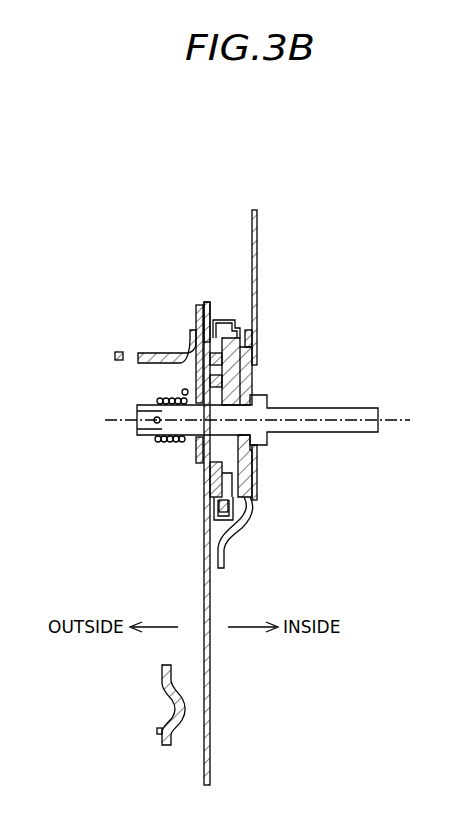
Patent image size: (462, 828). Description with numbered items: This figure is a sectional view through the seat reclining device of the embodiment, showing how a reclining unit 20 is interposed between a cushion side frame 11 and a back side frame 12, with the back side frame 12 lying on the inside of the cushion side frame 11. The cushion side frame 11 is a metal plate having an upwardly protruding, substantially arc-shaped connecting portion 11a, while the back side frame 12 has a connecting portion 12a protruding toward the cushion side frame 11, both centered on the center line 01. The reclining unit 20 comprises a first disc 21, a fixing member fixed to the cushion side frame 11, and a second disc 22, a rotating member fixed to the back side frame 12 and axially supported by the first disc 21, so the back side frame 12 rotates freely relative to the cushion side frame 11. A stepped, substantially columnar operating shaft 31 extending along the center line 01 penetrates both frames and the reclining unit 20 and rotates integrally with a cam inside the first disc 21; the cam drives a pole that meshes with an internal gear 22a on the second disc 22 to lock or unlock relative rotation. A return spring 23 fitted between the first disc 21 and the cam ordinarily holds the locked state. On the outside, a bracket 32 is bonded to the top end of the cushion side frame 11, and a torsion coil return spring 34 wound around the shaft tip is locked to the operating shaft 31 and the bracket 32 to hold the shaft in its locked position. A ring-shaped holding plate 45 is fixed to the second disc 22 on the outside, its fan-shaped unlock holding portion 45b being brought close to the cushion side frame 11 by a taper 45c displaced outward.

The cushion side frame 11 is at (210, 650).
The connecting portion 11a is at (207, 300).
The back side frame 12 is at (258, 240).
The connecting portion 12a is at (258, 488).
The reclining unit 20 is at (245, 317).
The first disc 21 is at (210, 336).
The second disc 22 is at (258, 375).
The internal gear 22a is at (245, 478).
The return spring 23 is at (208, 362).
The operating shaft 31 is at (358, 405).
The center line 01 is at (396, 417).
The bracket 32 is at (196, 320).
The return spring 34 is at (165, 445).
The holding plate 45 is at (255, 338).
The unlock holding portion 45b is at (223, 565).
The taper 45c is at (250, 515).